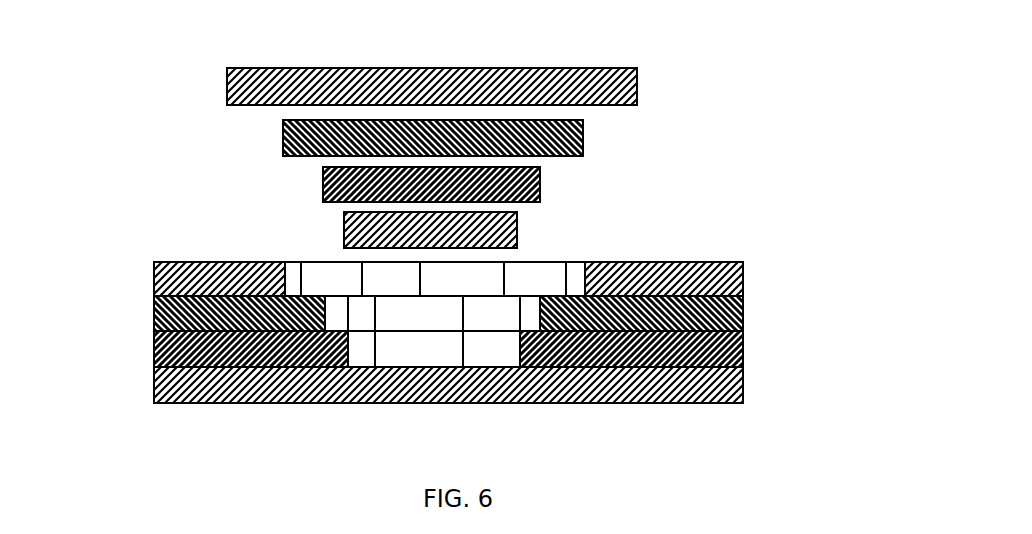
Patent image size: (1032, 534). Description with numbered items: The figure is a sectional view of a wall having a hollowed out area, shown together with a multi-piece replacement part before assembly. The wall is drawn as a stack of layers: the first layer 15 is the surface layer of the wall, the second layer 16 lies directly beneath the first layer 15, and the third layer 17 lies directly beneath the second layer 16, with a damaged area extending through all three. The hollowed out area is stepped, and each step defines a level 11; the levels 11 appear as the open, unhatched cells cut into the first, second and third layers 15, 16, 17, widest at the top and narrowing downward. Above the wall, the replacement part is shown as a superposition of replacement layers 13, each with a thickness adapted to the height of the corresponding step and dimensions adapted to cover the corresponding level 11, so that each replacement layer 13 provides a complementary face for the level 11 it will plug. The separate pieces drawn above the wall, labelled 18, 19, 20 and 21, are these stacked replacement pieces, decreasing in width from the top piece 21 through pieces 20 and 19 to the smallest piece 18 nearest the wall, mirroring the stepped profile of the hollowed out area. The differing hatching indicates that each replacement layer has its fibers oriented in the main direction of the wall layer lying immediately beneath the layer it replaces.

The level 11 is at (372, 300).
The replacement layers 13 is at (385, 166).
The first layer 15 is at (141, 277).
The second layer 16 is at (141, 313).
The third layer 17 is at (141, 347).
The layer 18 is at (523, 227).
The layer 19 is at (541, 180).
The layer 20 is at (591, 132).
The layer 21 is at (630, 74).